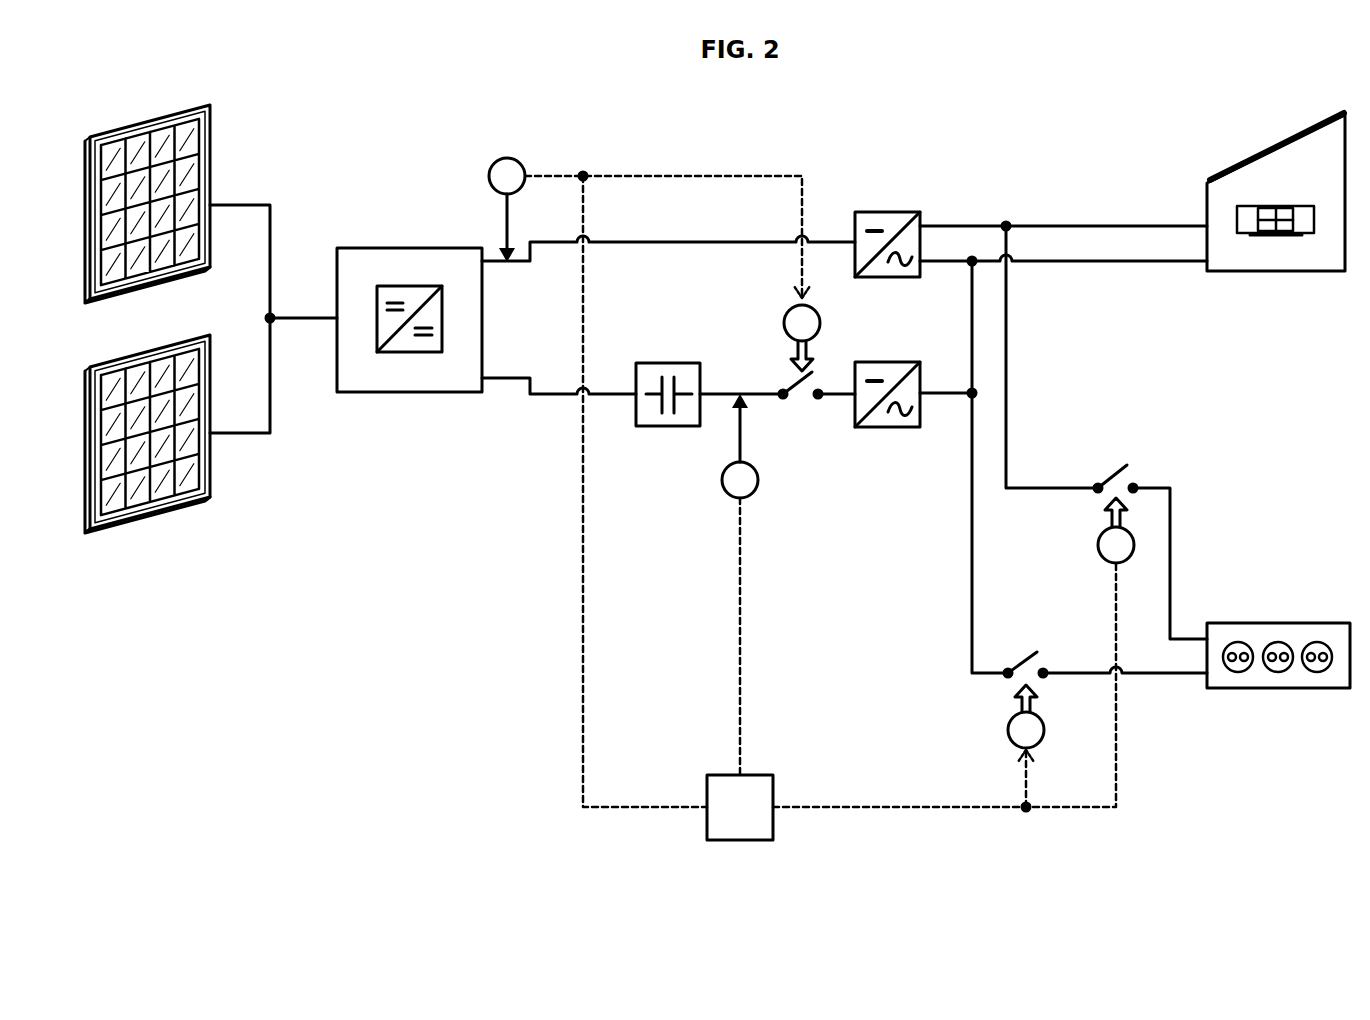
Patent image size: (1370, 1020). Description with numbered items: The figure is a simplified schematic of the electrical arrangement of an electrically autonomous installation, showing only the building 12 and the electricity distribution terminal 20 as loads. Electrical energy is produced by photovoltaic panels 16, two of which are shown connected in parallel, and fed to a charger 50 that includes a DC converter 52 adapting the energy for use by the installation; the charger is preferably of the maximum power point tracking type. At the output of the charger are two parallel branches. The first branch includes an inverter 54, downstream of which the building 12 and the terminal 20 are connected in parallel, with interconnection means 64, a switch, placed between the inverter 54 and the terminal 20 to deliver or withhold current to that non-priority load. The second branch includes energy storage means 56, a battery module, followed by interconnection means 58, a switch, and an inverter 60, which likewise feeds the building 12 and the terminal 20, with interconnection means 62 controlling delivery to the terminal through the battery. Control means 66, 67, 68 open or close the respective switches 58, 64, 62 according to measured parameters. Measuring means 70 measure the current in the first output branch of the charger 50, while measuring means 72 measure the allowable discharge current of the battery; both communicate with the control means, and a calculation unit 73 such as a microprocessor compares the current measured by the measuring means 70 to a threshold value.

The building 12 is at (1275, 274).
The photovoltaic panels 16 is at (217, 142).
The electricity distribution terminal 20 is at (1278, 620).
The charger 50 is at (444, 298).
The DC converter 52 is at (410, 297).
The inverter 54 is at (891, 210).
The energy storage means 56 is at (668, 361).
The interconnection means 58 is at (792, 377).
The inverter 60 is at (889, 430).
The interconnection means 62 is at (1022, 657).
The interconnection means 64 is at (1112, 470).
The control means 66 is at (824, 324).
The control means 67 is at (1095, 545).
The control means 68 is at (1005, 730).
The measuring means 70 is at (519, 154).
The measuring means 72 is at (762, 480).
The calculation unit 73 is at (727, 821).